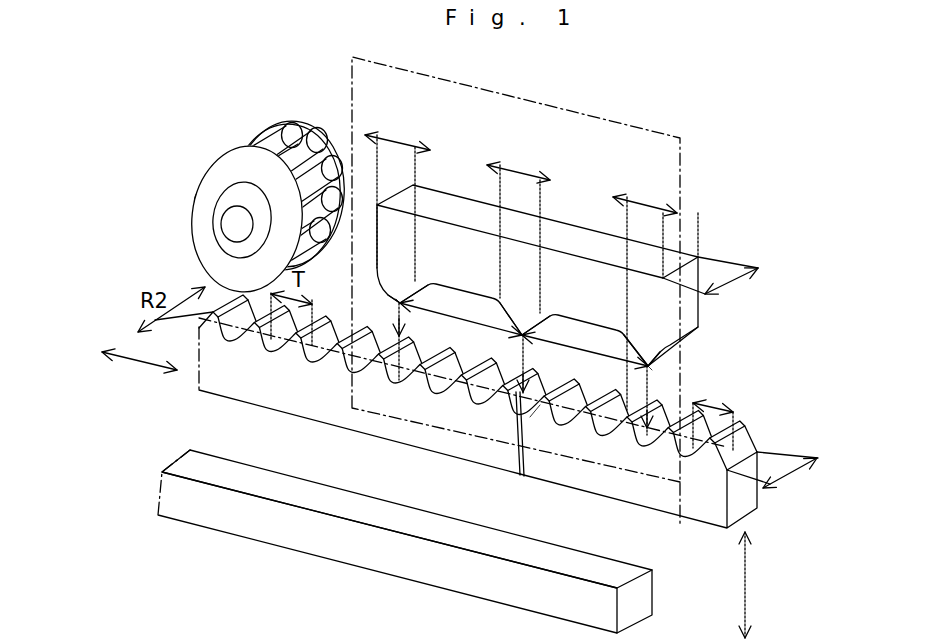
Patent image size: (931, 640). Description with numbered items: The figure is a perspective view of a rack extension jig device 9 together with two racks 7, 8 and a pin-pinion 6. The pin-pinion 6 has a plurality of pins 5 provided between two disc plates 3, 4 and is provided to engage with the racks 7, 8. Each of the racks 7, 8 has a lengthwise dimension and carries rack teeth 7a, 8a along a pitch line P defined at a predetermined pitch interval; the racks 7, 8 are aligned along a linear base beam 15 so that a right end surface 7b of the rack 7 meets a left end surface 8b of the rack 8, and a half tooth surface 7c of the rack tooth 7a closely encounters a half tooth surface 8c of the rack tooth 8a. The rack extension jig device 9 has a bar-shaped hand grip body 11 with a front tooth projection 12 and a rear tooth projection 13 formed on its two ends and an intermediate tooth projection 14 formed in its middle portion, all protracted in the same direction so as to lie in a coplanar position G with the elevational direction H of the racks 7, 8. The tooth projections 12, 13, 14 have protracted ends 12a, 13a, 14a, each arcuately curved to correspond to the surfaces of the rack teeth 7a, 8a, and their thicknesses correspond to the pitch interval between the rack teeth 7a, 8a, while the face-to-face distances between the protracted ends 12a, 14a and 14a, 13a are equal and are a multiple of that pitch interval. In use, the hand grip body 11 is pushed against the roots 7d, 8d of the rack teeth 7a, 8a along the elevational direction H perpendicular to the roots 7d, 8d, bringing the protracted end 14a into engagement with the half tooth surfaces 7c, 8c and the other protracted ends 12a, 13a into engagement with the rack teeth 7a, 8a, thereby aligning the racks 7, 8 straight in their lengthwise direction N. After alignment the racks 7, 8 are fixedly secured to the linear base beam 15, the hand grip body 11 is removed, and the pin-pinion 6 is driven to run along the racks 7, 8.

The disc plate 3 is at (246, 180).
The disc plate 4 is at (293, 122).
The pins 5 is at (314, 150).
The pin-pinion 6 is at (212, 158).
The rack 7 is at (372, 404).
The rack tooth 7a is at (378, 372).
The right end surface 7b is at (515, 420).
The half tooth surface 7c is at (476, 408).
The root 7d is at (322, 370).
The rack 8 is at (619, 455).
The rack tooth 8a is at (585, 430).
The left end surface 8b is at (521, 435).
The half tooth surface 8c is at (558, 430).
The root 8d is at (472, 408).
The rack extension jig device 9 is at (592, 275).
The hand grip body 11 is at (562, 226).
The front tooth projection 12 is at (390, 279).
The protracted end 12a is at (405, 306).
The rear tooth projection 13 is at (644, 363).
The protracted end 13a is at (651, 368).
The intermediate tooth projection 14 is at (517, 334).
The protracted end 14a is at (528, 338).
The linear base beam 15 is at (630, 577).
The coplanar position G is at (681, 155).
The pitch line P is at (199, 322).
The lengthwise direction N is at (139, 372).
The elevational direction H is at (761, 585).